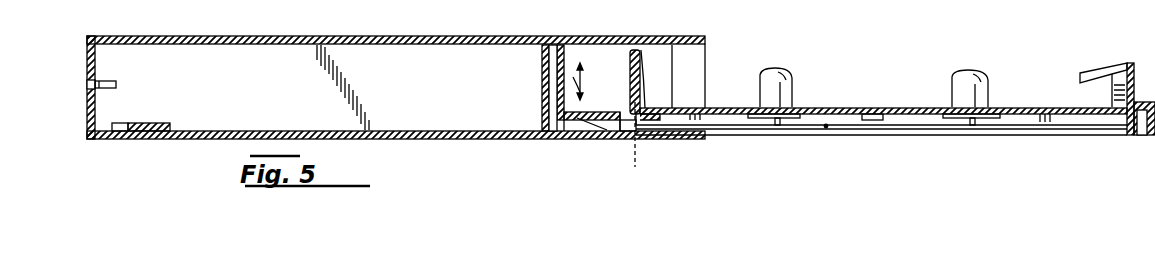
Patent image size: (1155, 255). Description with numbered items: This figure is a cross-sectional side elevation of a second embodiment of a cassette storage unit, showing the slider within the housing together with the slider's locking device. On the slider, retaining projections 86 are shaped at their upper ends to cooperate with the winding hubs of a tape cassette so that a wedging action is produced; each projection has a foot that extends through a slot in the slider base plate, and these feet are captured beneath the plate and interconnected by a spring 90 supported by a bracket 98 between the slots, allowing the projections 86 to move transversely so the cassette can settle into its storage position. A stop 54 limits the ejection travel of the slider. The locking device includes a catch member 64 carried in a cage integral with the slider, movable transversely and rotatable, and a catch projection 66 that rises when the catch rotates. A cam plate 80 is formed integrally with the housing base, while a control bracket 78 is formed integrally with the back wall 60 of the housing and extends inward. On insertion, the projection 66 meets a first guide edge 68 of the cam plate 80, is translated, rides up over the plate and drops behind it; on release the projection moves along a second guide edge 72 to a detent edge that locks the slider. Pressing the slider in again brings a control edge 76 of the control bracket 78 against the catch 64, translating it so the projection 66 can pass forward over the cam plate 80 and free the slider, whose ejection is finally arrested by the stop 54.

The stop 54 is at (600, 140).
The back wall 60 is at (87, 101).
The catch member 64 is at (545, 83).
The catch projection 66 is at (556, 135).
The first guide edge 68 is at (172, 128).
The second guide edge 72 is at (123, 122).
The control edge 76 is at (116, 84).
The control bracket 78 is at (95, 80).
The cam plate 80 is at (150, 122).
The retaining projections 86 is at (788, 73).
The spring 90 is at (826, 128).
The bracket 98 is at (875, 122).